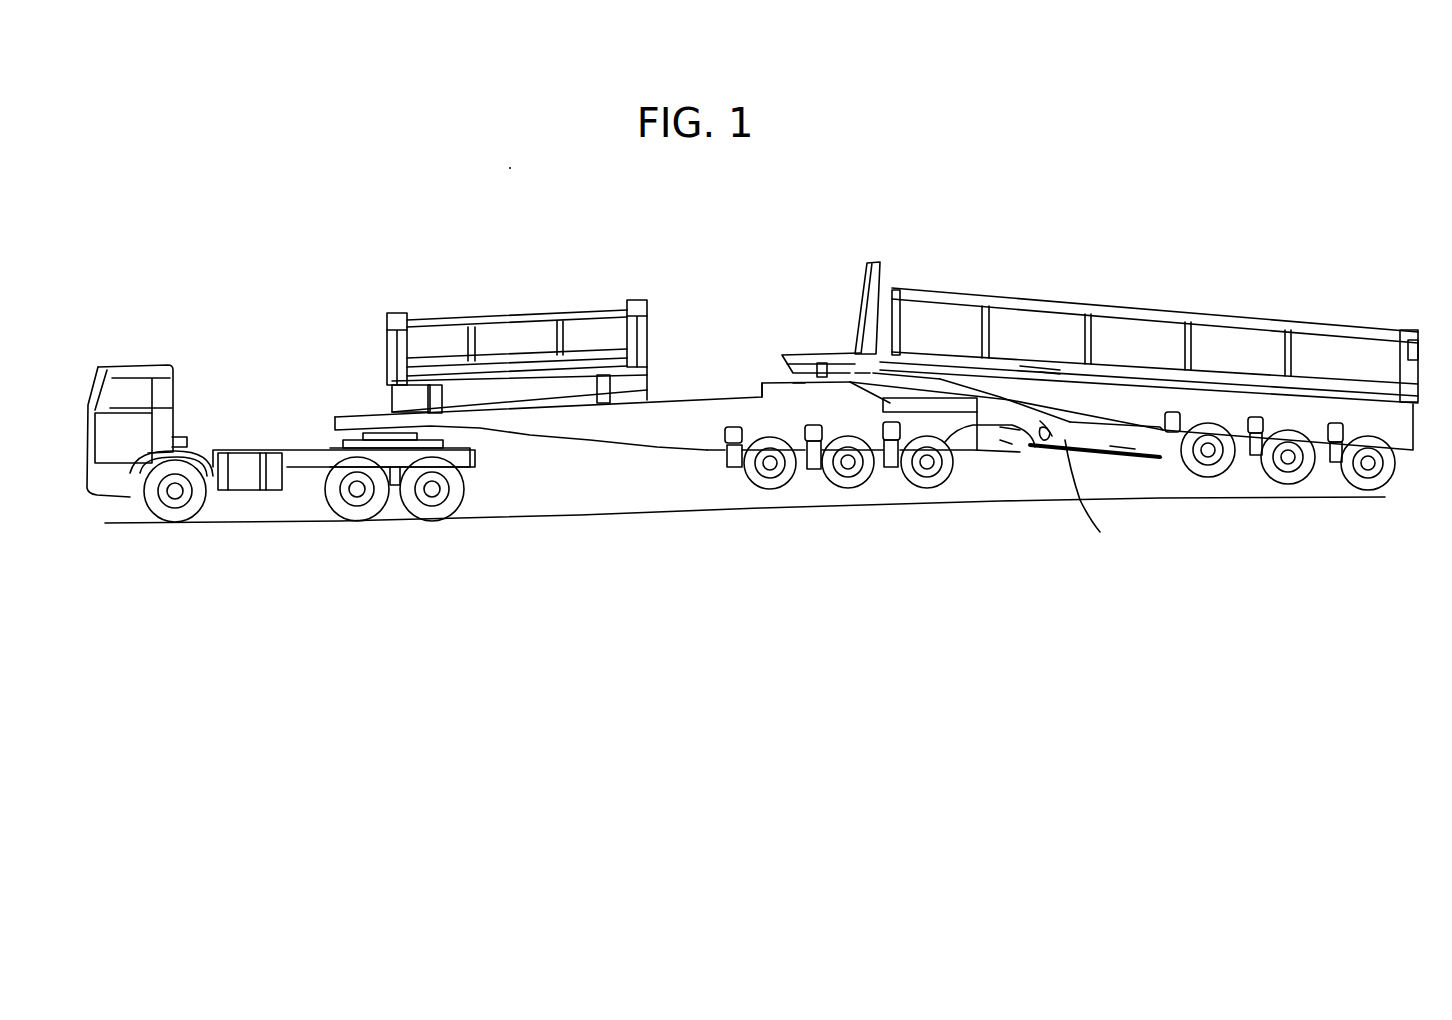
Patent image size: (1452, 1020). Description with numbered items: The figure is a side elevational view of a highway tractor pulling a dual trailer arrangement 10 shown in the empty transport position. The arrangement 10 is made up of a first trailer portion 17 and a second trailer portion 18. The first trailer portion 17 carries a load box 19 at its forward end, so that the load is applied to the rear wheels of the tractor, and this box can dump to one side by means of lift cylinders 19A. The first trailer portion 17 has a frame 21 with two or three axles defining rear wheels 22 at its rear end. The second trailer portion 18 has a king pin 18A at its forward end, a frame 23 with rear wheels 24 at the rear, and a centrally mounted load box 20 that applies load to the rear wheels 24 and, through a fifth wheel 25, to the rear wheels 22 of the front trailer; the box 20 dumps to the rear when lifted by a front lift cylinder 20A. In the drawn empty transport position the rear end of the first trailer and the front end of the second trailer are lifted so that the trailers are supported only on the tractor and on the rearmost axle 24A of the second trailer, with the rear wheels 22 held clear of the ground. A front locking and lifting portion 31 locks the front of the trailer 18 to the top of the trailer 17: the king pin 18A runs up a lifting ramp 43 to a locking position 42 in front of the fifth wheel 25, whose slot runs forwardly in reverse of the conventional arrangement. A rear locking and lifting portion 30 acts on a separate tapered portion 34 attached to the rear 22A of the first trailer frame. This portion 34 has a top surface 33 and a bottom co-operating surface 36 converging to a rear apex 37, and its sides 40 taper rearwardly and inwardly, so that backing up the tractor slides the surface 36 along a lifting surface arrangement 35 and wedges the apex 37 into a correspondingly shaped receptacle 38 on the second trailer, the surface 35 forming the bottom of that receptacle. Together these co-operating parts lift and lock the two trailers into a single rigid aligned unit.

The dual trailer arrangement 10 is at (838, 303).
The first trailer portion 17 is at (738, 375).
The second trailer portion 18 is at (1150, 283).
The king pin 18A is at (822, 362).
The load box 19 is at (527, 333).
The lift cylinders 19A is at (392, 400).
The load box 20 is at (1262, 340).
The front lift cylinder 20A is at (884, 268).
The frame 21 is at (593, 428).
The rear wheels 22 is at (822, 495).
The rear of the frame 22A is at (947, 412).
The frame 23 is at (1110, 458).
The rear wheels 24 is at (1250, 488).
The rearmost axle 24A is at (1366, 489).
The fifth wheel 25 is at (945, 400).
The rear locking and lifting portion 30 is at (1039, 390).
The front locking and lifting portion 31 is at (793, 338).
The top surface 33 is at (1003, 432).
The portion of the first trailer 34 is at (1012, 430).
The lifting surface arrangement 35 is at (1055, 450).
The co-operating surface 36 is at (1043, 442).
The rear apex 37 is at (1045, 437).
The receptacle 38 is at (1122, 447).
The sides 40 is at (1043, 437).
The locking position 42 is at (793, 383).
The lifting ramp 43 is at (858, 375).